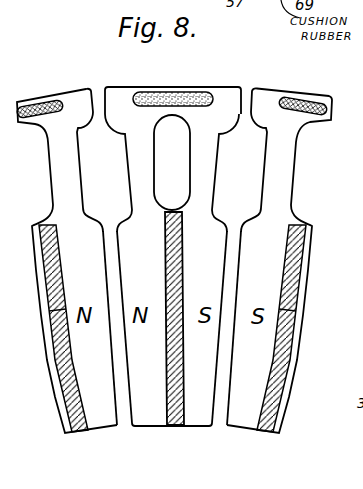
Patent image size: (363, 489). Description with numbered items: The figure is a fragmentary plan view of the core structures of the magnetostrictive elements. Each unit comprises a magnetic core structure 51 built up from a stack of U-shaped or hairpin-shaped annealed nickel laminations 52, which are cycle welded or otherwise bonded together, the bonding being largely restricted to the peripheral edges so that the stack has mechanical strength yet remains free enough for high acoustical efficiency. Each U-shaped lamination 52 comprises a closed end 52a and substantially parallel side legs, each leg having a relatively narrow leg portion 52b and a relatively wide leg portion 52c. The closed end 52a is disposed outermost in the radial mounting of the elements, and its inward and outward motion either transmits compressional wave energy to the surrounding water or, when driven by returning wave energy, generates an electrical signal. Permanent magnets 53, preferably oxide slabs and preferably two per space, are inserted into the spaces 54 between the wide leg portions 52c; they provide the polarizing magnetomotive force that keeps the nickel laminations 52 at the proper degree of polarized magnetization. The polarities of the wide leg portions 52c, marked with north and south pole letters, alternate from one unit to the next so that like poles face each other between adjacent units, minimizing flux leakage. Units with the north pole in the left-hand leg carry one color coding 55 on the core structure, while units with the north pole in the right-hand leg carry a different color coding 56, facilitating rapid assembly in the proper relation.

The magnetic core structure 51 is at (229, 84).
The U-shaped nickel lamination 52 is at (288, 182).
The closed end of lamination 52a is at (115, 91).
The relatively narrow leg portion 52b is at (131, 168).
The relatively wide leg portion 52c is at (128, 281).
The permanent magnet 53 is at (183, 252).
The space between wide leg portions 54 is at (176, 428).
The color coding 55 is at (176, 90).
The color coding 56 is at (38, 100).